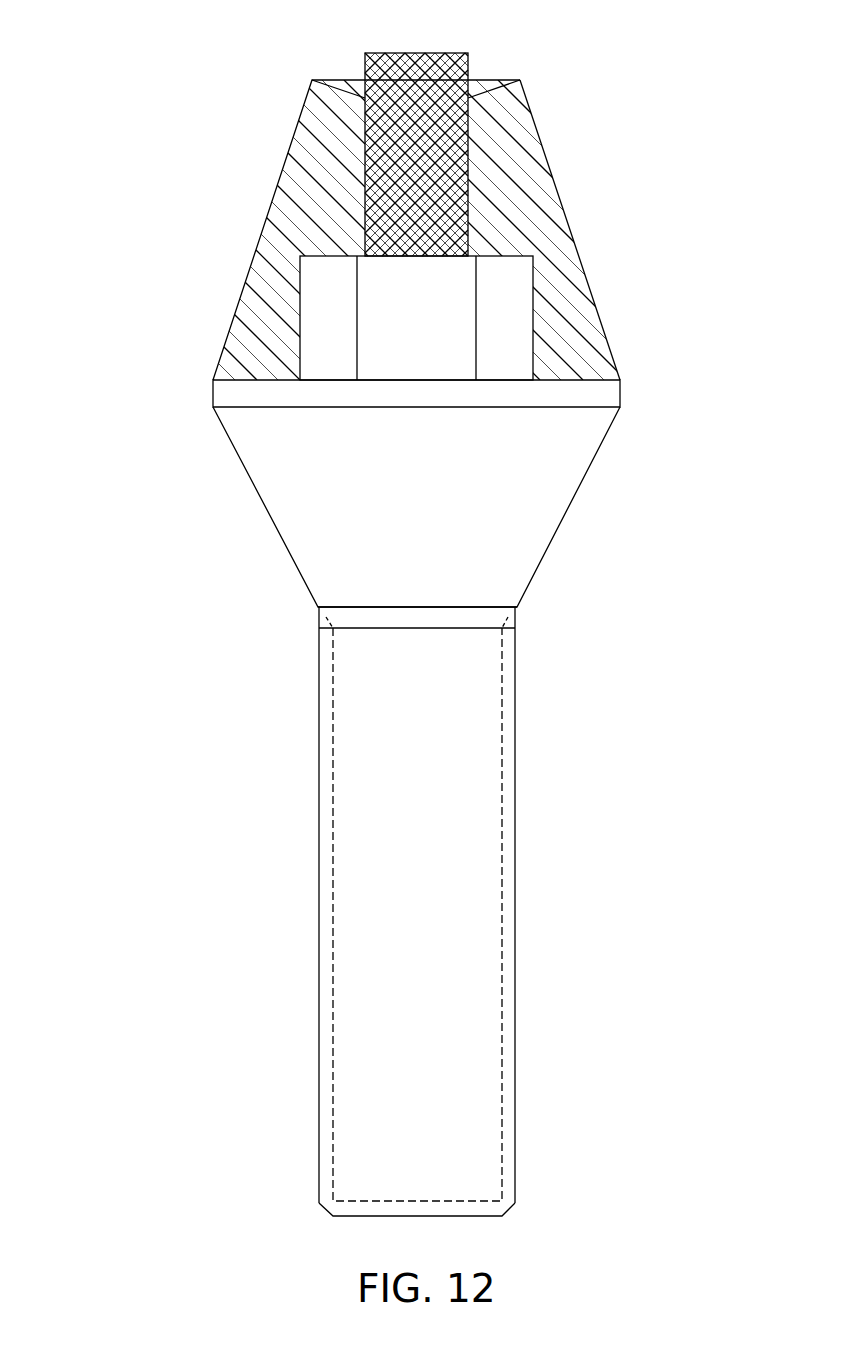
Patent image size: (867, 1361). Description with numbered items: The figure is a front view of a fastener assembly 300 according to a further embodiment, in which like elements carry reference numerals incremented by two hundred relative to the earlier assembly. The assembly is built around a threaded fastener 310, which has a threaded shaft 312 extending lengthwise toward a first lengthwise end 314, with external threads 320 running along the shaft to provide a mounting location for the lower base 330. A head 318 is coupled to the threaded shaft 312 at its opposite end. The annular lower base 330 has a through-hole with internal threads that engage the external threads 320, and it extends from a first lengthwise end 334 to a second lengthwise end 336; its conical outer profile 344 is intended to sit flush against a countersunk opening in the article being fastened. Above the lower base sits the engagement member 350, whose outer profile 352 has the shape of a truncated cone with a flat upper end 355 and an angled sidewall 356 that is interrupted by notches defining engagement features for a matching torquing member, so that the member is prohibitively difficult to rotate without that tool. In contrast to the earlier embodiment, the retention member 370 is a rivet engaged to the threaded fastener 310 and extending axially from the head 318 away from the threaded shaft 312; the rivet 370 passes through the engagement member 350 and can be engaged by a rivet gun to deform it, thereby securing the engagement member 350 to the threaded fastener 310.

The fastener assembly 300 is at (160, 641).
The threaded fastener 310 is at (478, 1069).
The threaded shaft 312 is at (516, 845).
The first lengthwise end 314 is at (445, 1218).
The head 318 is at (512, 307).
The external threads 320 is at (325, 1078).
The lower base 330 is at (540, 520).
The first lengthwise end 334 is at (496, 620).
The second lengthwise end 336 is at (590, 378).
The outer profile 344 is at (605, 440).
The engagement member 350 is at (547, 153).
The outer profile 352 is at (563, 200).
The flat upper end 355 is at (497, 78).
The angled sidewall 356 is at (288, 233).
The retention member 370 is at (365, 63).